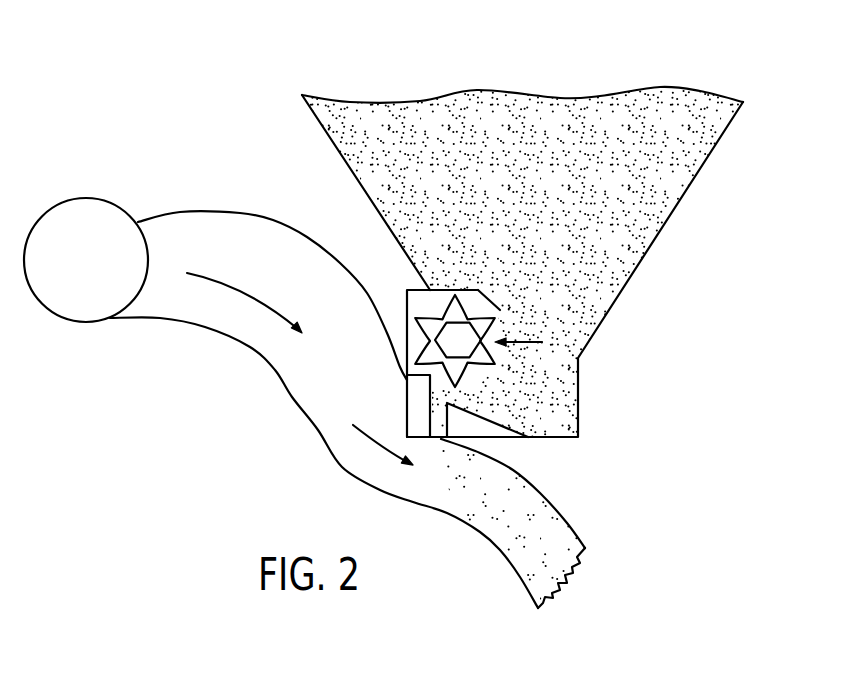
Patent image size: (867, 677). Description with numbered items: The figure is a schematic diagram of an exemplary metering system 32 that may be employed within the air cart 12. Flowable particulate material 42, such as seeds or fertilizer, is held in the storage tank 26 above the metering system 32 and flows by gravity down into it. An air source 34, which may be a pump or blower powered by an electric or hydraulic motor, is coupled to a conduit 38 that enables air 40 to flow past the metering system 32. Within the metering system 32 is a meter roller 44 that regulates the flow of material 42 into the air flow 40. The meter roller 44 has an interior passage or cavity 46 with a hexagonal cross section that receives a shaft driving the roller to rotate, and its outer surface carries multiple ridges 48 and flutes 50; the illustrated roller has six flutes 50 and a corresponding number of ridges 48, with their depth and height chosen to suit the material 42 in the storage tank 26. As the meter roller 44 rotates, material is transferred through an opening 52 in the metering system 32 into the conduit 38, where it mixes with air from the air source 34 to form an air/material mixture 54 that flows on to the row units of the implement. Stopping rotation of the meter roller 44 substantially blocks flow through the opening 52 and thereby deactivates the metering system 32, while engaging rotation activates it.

The air cart 12 is at (163, 81).
The storage tank 26 is at (327, 130).
The metering system 32 is at (394, 284).
The air source 34 is at (84, 198).
The conduit 38 is at (285, 387).
The air 40 is at (240, 288).
The flowable particulate material 42 is at (674, 186).
The meter roller 44 is at (527, 342).
The interior passage/cavity 46 is at (442, 340).
The ridges 48 is at (432, 325).
The flutes 50 is at (465, 318).
The opening 52 is at (434, 424).
The air/material mixture 54 is at (497, 527).